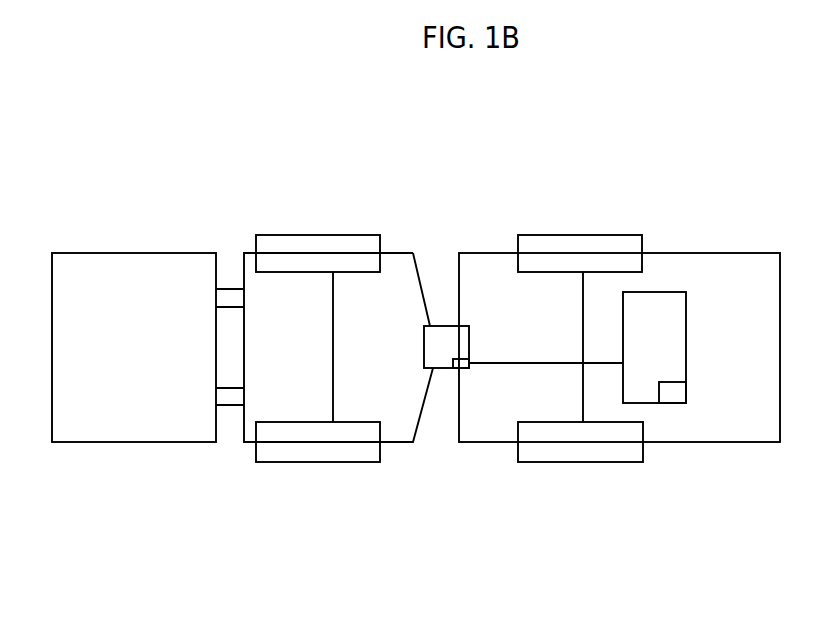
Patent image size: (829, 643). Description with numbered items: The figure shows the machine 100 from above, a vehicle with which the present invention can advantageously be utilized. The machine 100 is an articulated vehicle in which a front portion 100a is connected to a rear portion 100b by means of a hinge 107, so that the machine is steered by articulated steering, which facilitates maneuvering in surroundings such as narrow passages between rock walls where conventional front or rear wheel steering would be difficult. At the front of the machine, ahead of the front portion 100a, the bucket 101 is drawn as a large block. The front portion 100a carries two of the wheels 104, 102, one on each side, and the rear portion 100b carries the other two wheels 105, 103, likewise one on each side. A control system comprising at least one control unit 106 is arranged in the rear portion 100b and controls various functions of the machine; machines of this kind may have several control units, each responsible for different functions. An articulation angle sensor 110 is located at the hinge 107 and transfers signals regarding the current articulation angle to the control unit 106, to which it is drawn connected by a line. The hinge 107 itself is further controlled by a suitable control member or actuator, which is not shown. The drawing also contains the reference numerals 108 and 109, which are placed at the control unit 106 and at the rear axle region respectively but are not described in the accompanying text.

The machine 100 is at (735, 442).
The front portion 100a is at (405, 250).
The rear portion 100b is at (493, 253).
The bucket 101 is at (143, 423).
The wheel 102 is at (350, 452).
The wheel 103 is at (613, 453).
The wheel 104 is at (358, 247).
The wheel 105 is at (607, 242).
The control unit 106 is at (654, 347).
The hinge 107 is at (446, 347).
The controller interface 108 is at (673, 395).
The rear axle 109 is at (577, 417).
The articulation angle sensor 110 is at (467, 369).